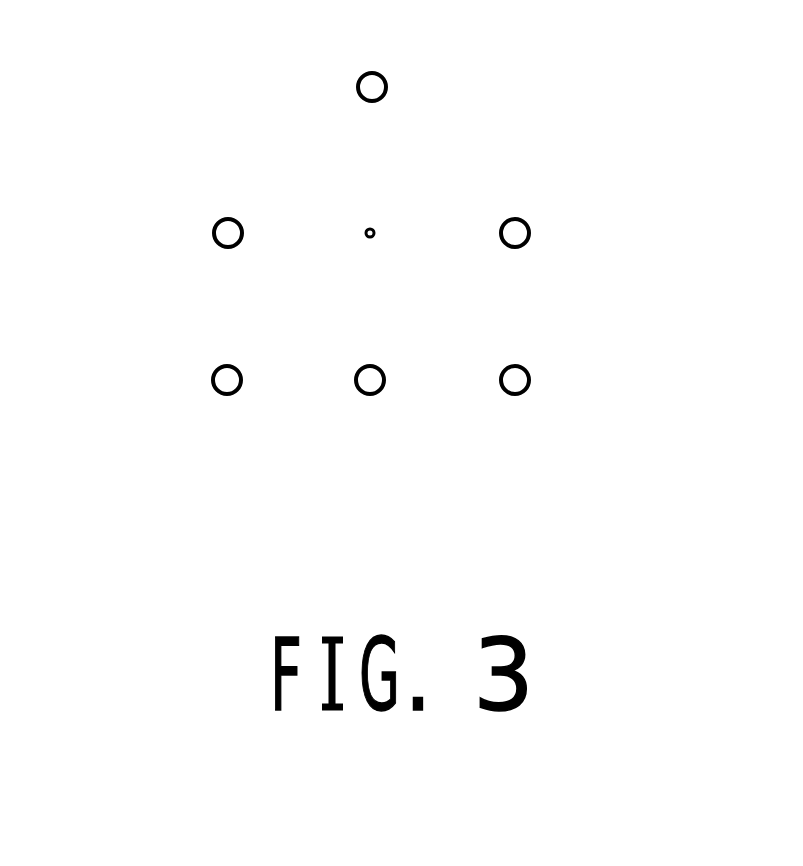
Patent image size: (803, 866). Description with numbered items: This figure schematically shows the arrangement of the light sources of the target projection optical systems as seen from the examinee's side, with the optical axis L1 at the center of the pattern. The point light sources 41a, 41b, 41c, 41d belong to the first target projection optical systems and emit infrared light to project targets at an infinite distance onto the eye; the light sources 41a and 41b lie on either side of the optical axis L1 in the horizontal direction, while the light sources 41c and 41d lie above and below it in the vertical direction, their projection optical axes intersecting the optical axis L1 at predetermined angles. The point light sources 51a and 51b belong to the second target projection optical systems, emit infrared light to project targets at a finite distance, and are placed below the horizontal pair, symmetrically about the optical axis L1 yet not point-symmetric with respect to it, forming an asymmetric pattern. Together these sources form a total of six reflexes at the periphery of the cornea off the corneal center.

The point light source 41a is at (214, 220).
The point light source 41b is at (528, 220).
The point light source 41c is at (385, 74).
The point light source 41d is at (373, 395).
The point light source 51a is at (213, 368).
The point light source 51b is at (528, 368).
The optical axis L1 is at (375, 228).